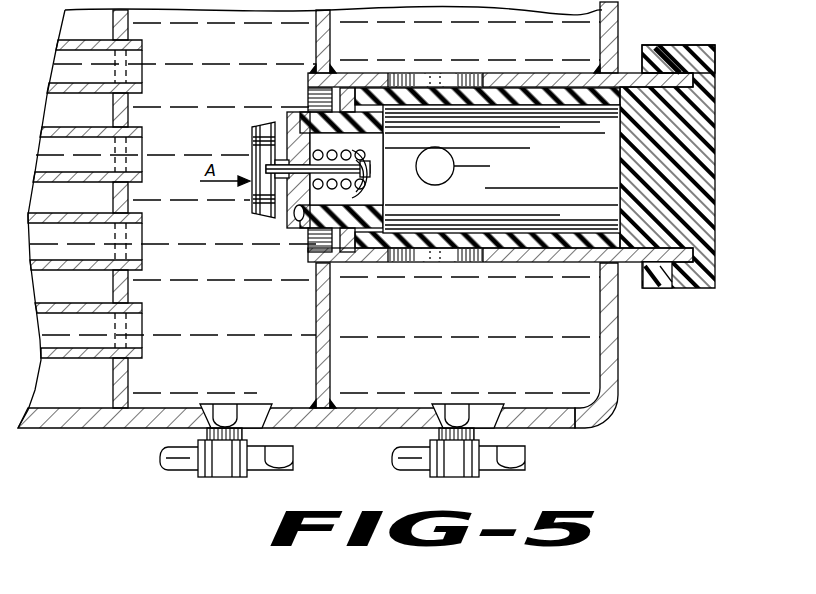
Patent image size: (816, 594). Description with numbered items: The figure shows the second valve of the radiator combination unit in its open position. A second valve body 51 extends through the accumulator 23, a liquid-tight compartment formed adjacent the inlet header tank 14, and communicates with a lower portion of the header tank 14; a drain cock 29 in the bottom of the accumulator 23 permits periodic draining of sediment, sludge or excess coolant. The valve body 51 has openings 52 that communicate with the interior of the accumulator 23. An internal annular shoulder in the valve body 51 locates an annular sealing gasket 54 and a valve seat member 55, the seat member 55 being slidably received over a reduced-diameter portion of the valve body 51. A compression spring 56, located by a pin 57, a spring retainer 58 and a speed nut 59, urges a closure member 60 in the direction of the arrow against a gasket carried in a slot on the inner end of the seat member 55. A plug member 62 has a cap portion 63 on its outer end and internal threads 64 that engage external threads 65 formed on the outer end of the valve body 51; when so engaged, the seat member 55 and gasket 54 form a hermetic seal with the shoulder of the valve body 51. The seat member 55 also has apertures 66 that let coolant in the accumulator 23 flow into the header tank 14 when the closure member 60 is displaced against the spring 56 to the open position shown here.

The inlet header tank 14 is at (221, 49).
The accumulator compartment 23 is at (521, 47).
The drain cock 29 is at (470, 474).
The second valve body 51 is at (538, 263).
The openings 52 is at (436, 263).
The annular sealing gasket 54 is at (322, 100).
The valve seat member 55 is at (350, 104).
The compression spring 56 is at (312, 244).
The pin 57 is at (362, 214).
The spring retainer 58 is at (360, 192).
The speed nut 59 is at (362, 163).
The closure member 60 is at (262, 206).
The plug member 62 is at (716, 172).
The cap portion 63 is at (680, 56).
The internal threads 64 is at (662, 72).
The external threads 65 is at (660, 282).
The apertures 66 is at (296, 220).